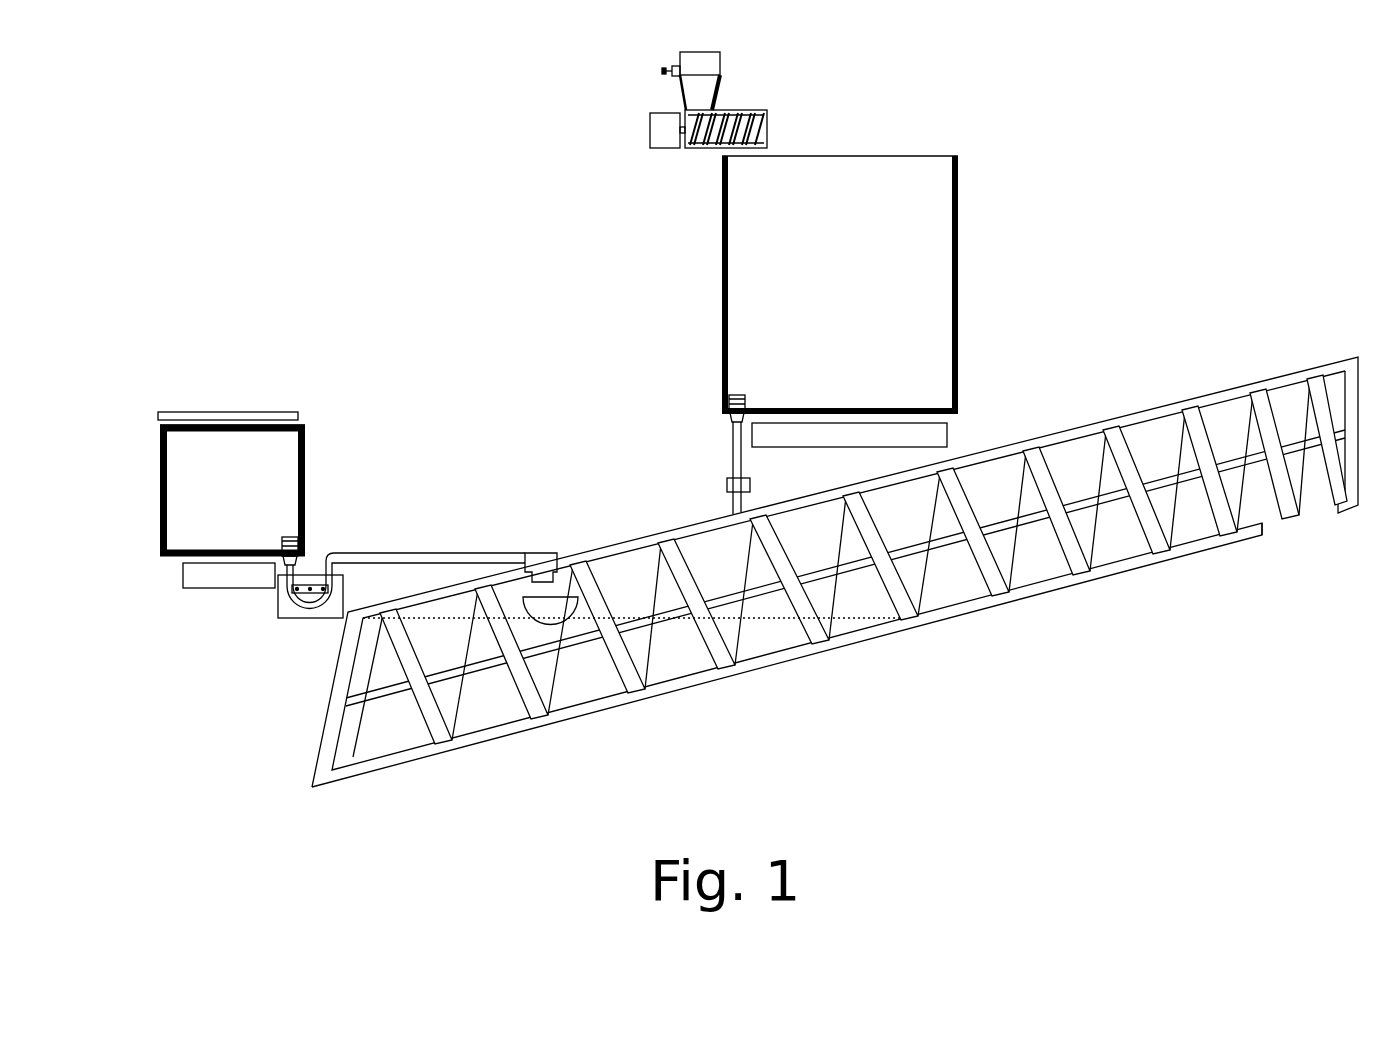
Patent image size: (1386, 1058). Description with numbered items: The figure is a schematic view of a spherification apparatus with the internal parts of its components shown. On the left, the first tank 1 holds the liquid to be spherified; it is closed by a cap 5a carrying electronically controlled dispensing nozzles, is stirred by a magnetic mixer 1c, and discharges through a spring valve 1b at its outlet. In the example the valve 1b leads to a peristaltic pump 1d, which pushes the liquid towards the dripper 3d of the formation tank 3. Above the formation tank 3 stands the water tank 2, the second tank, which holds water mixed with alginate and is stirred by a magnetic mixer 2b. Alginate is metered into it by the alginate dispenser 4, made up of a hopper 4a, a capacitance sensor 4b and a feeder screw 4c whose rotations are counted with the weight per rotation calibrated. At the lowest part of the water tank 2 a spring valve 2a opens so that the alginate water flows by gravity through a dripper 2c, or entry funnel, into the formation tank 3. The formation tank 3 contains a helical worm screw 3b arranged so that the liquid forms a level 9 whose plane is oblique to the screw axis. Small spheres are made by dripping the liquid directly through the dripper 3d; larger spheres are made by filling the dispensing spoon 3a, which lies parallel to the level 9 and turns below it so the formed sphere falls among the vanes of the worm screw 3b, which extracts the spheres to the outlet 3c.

The first tank 1 is at (160, 495).
The spring valve 1b is at (282, 547).
The magnetic mixer 1c is at (230, 577).
The peristaltic pump 1d is at (332, 610).
The cap 5a is at (246, 412).
The water tank 2 is at (960, 250).
The spring valve 2a is at (745, 393).
The magnetic mixer 2b is at (868, 438).
The dripper 2c is at (727, 483).
The formation tank 3 is at (835, 568).
The dispensing spoon 3a is at (547, 610).
The helical worm screw 3b is at (890, 565).
The outlet 3c is at (1303, 520).
The dripper 3d is at (542, 560).
The alginate dispenser 4 is at (715, 88).
The hopper 4a is at (702, 65).
The capacitance sensor 4b is at (659, 82).
The feeder screw 4c is at (728, 118).
The level 9 is at (775, 622).